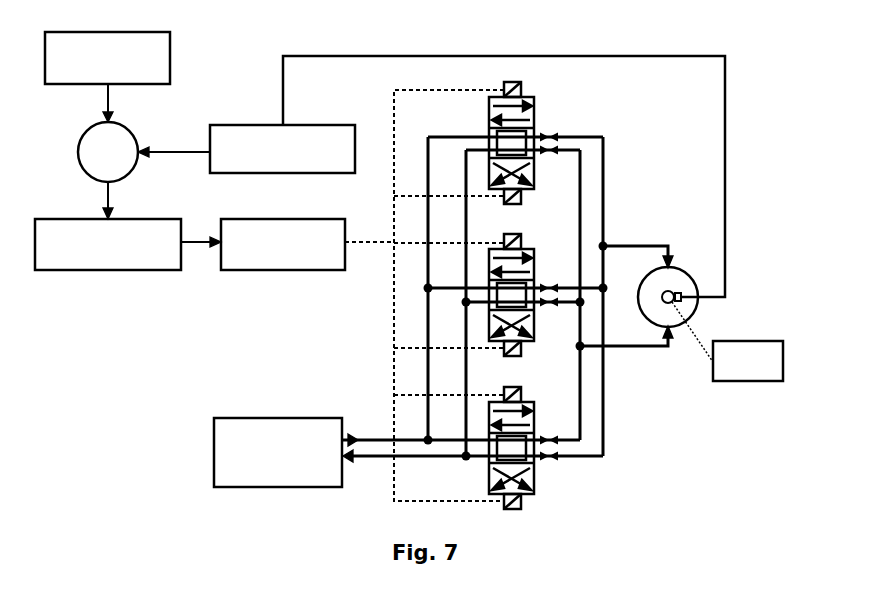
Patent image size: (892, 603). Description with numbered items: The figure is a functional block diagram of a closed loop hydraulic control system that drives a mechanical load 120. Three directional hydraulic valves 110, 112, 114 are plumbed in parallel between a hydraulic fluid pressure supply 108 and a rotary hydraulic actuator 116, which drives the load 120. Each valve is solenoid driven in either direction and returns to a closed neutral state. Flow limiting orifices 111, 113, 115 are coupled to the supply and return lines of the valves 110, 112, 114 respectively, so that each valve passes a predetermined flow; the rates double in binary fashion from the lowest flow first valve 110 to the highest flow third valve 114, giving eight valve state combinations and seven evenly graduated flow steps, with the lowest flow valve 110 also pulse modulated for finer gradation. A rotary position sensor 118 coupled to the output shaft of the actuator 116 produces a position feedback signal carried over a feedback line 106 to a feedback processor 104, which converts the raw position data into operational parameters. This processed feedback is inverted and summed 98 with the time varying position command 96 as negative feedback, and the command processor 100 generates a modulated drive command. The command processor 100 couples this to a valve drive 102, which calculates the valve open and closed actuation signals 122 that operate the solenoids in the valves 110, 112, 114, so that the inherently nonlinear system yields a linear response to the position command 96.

The position command 96 is at (170, 40).
The summing junction 98 is at (83, 136).
The command processor 100 is at (100, 270).
The valve drive 102 is at (265, 270).
The feedback processor 104 is at (240, 125).
The feedback line 106 is at (418, 56).
The hydraulic fluid pressure supply 108 is at (260, 418).
The directional hydraulic valve V1 110 is at (536, 176).
The flow limiting orifices 111 is at (548, 132).
The directional hydraulic valve V2 112 is at (561, 349).
The flow limiting orifices 113 is at (553, 284).
The directional hydraulic valve V3 114 is at (561, 503).
The flow limiting orifices 115 is at (552, 460).
The rotary hydraulic actuator 116 is at (672, 265).
The rotary position sensor 118 is at (672, 293).
The load 120 is at (735, 341).
The valve actuation signals 122 is at (380, 244).